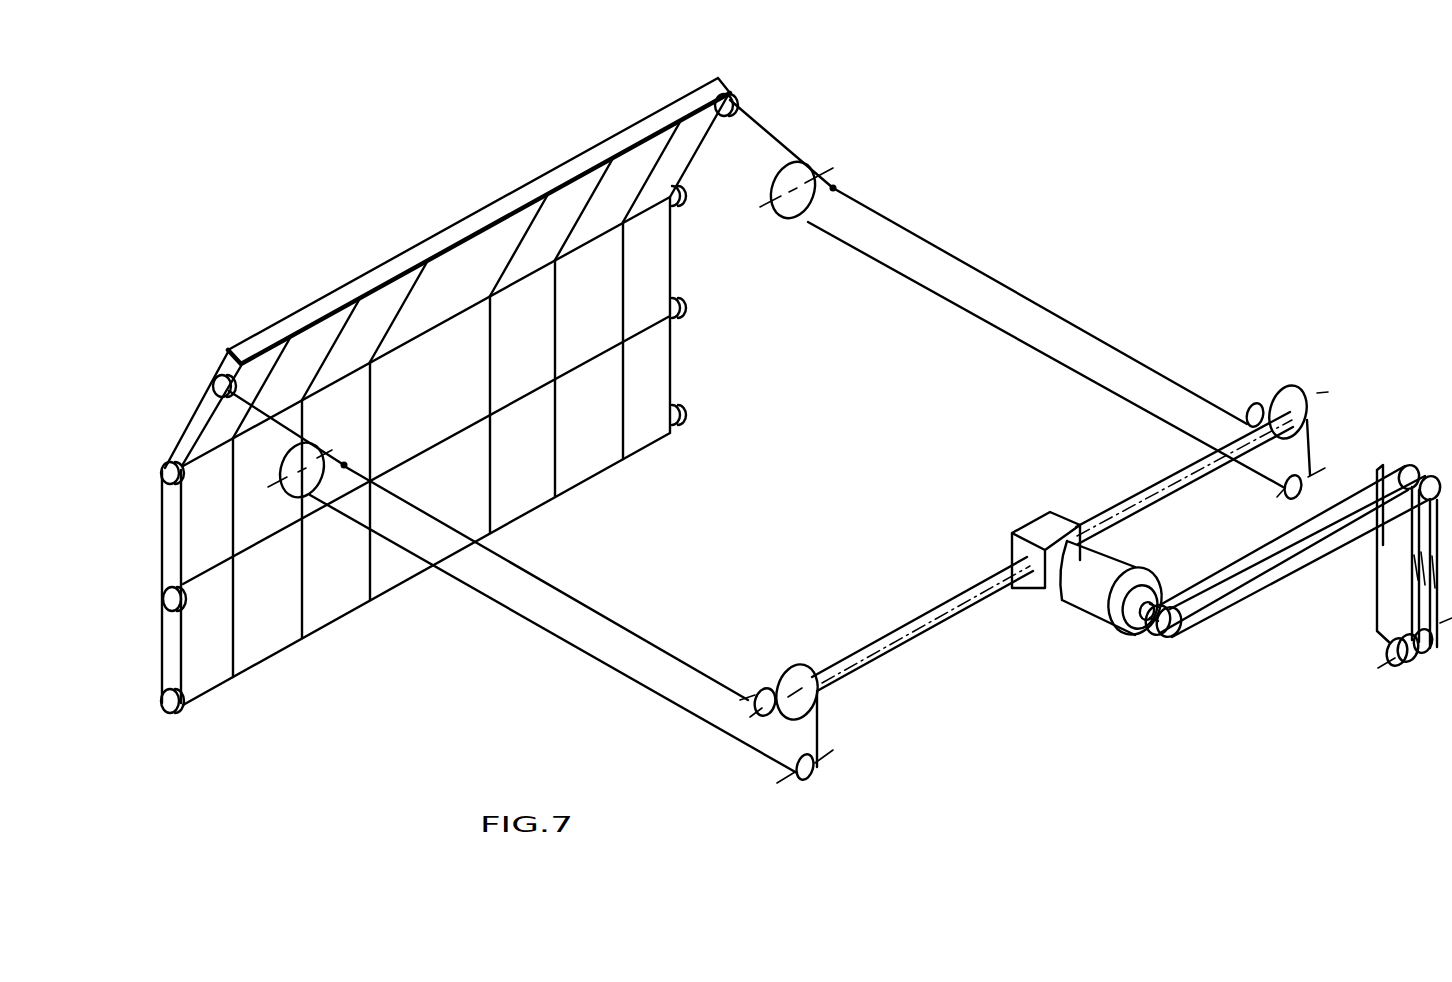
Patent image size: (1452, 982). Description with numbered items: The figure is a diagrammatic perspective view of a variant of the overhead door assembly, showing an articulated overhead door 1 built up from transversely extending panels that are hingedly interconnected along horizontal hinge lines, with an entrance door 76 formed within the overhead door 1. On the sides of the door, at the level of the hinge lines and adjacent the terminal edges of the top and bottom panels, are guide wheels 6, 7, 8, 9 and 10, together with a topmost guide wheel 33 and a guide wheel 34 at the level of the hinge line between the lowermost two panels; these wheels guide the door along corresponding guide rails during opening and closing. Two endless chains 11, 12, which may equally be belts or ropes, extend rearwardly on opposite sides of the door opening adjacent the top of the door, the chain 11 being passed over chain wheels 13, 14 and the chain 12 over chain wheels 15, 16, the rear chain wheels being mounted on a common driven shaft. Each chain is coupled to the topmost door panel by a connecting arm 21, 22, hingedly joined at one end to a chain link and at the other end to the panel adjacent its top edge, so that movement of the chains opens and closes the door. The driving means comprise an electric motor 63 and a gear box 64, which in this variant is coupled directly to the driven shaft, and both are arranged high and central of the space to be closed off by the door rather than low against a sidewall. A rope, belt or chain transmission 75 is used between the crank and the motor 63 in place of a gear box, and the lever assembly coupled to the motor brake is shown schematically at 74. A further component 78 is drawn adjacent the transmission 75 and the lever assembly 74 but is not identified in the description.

The overhead door 1 is at (156, 535).
The guide wheel 6 is at (215, 379).
The guide wheel 7 is at (166, 462).
The guide wheel 8 is at (164, 600).
The guide wheel 9 is at (169, 712).
The guide wheel 10 is at (687, 197).
The endless chain 11 is at (947, 252).
The endless chain 12 is at (593, 609).
The chain wheel 13 is at (790, 212).
The chain wheel 14 is at (1278, 386).
The chain wheel 15 is at (297, 483).
The chain wheel 16 is at (791, 673).
The connecting arm 21 is at (767, 132).
The connecting arm 22 is at (295, 428).
The topmost guide wheel 33 is at (733, 101).
The guide wheel 34 is at (690, 308).
The electric motor 63 is at (1095, 607).
The gear box 64 is at (1038, 528).
The lever assembly 74 is at (1377, 580).
The rope, belt or chain transmission 75 is at (1238, 596).
The entrance door 76 is at (288, 651).
The pulley 78 is at (1390, 656).